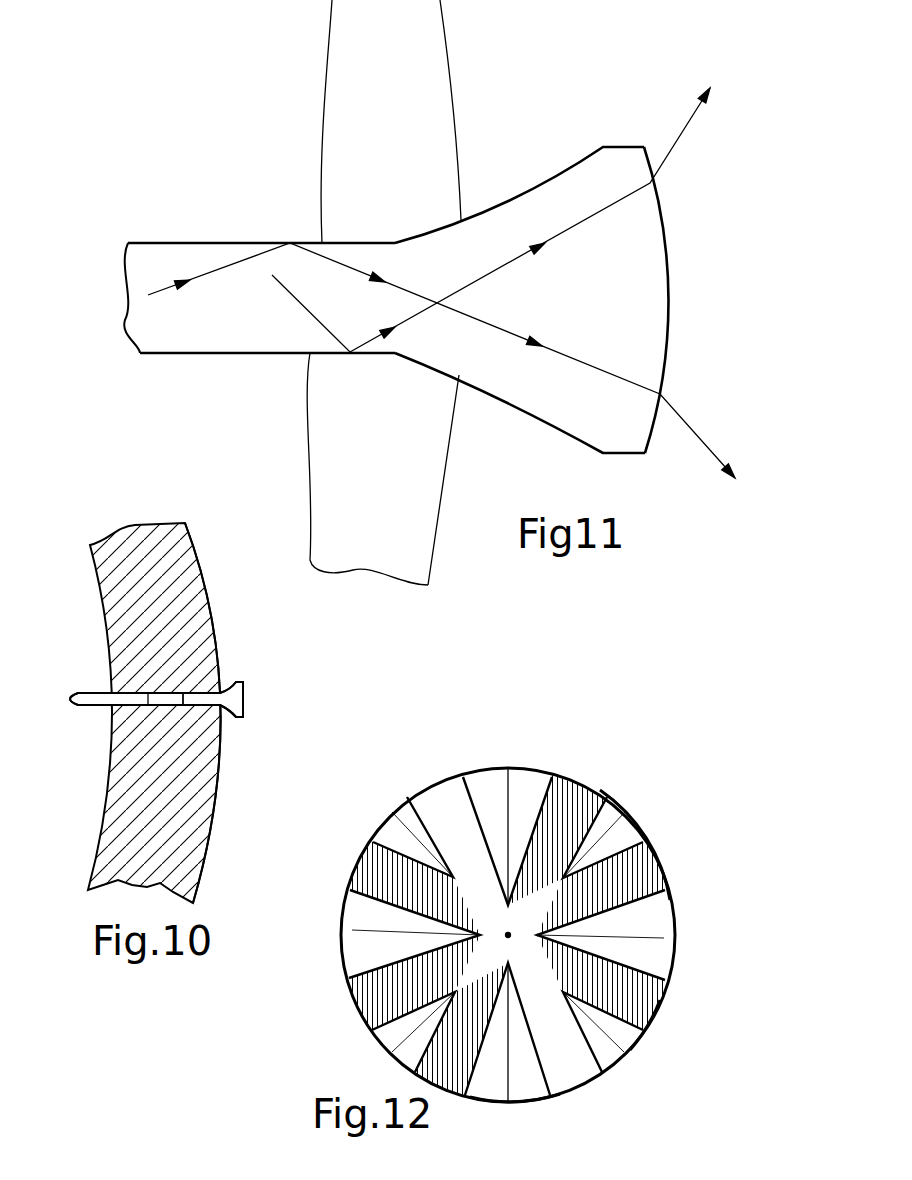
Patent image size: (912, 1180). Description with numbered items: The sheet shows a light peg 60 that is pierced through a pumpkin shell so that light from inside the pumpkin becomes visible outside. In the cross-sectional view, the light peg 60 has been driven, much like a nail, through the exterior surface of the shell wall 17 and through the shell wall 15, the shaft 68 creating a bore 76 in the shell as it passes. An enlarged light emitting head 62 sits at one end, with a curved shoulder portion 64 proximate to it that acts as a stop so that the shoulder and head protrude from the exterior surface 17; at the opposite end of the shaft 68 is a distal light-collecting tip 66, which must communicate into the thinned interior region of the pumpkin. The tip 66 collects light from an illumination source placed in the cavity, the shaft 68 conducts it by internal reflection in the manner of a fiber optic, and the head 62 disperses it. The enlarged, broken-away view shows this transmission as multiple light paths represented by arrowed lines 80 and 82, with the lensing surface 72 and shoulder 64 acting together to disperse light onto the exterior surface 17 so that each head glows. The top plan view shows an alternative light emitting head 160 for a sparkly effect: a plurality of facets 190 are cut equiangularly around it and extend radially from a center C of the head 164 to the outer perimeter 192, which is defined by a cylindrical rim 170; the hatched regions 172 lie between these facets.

In FIG. 11, the shell wall 15 is at (430, 43).
In FIG. 10, the shell wall 15 is at (188, 562).
In FIG. 11, the exterior surface of the shell wall 17 is at (457, 119).
In FIG. 10, the exterior surface of the shell wall 17 is at (217, 805).
In FIG. 10, the light peg 60 is at (183, 702).
In FIG. 11, the light emitting head 62 is at (638, 330).
In FIG. 10, the light emitting head 62 is at (245, 702).
In FIG. 11, the curved shoulder portion 64 is at (527, 190).
In FIG. 10, the curved shoulder portion 64 is at (227, 682).
In FIG. 10, the light-collecting tip 66 is at (87, 690).
In FIG. 10, the shaft 68 is at (150, 712).
In FIG. 11, the lensing surface 72 is at (668, 258).
In FIG. 10, the bore 76 is at (152, 700).
In FIG. 11, the arrowed line 80 is at (503, 266).
In FIG. 11, the arrowed line 82 is at (503, 333).
In FIG. 12, the light emitting head 160 is at (682, 960).
In FIG. 12, the alternative head 164 is at (660, 857).
In FIG. 12, the cylindrical rim 170 is at (567, 1100).
In FIG. 12, the hatched sector 172 is at (390, 878).
In FIG. 12, the facets 190 is at (528, 785).
In FIG. 12, the outer perimeter 192 is at (658, 1015).
In FIG. 12, the center C is at (508, 933).